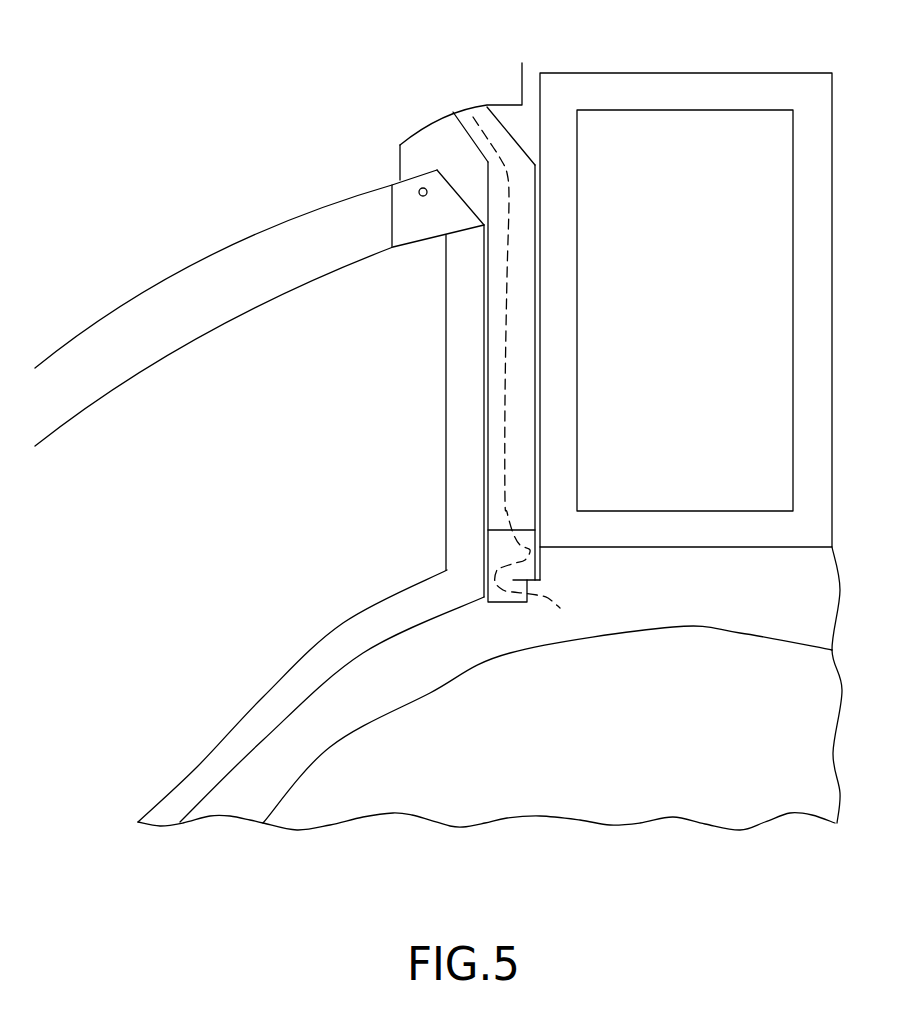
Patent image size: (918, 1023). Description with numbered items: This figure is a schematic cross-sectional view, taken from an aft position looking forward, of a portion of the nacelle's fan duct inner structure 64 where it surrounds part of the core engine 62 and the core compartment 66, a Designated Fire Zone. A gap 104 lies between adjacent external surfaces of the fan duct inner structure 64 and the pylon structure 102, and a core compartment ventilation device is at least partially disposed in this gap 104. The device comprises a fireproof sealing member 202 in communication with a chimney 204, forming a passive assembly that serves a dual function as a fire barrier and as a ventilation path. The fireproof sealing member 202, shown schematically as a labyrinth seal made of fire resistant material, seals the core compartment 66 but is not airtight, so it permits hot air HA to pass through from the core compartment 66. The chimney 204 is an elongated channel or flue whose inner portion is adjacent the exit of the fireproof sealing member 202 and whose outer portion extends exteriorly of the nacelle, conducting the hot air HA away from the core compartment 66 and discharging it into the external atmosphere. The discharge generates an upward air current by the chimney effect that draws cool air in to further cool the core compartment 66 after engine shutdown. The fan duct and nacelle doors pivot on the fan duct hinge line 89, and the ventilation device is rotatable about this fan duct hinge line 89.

The hot air HA is at (458, 105).
The fan duct hinge line 89 is at (423, 188).
The chimney 204 is at (515, 133).
The gap 104 is at (537, 167).
The pylon structure 102 is at (748, 157).
The fireproof sealing member 202 is at (497, 557).
The fan duct inner structure 64 is at (360, 628).
The core compartment 66 is at (773, 604).
The core engine 62 is at (697, 745).